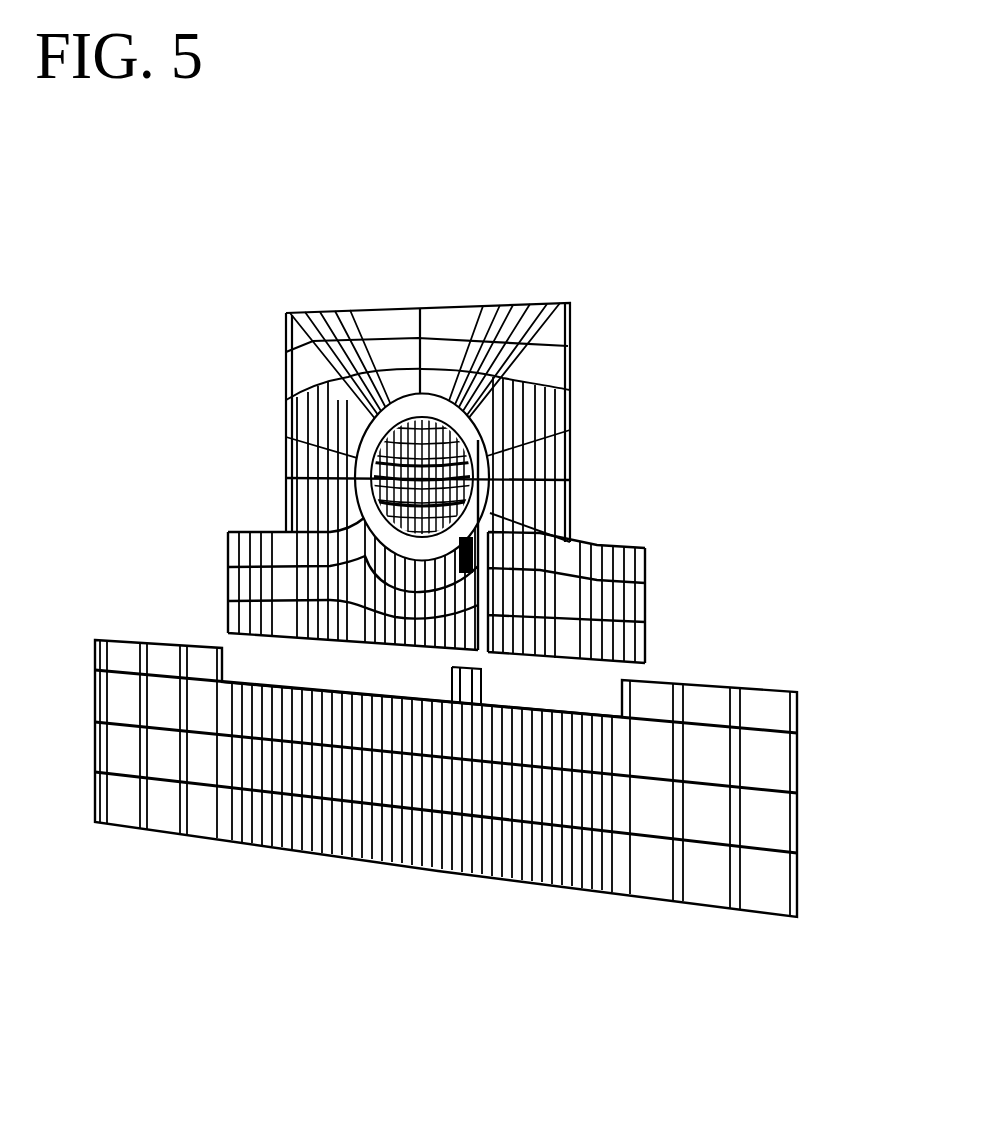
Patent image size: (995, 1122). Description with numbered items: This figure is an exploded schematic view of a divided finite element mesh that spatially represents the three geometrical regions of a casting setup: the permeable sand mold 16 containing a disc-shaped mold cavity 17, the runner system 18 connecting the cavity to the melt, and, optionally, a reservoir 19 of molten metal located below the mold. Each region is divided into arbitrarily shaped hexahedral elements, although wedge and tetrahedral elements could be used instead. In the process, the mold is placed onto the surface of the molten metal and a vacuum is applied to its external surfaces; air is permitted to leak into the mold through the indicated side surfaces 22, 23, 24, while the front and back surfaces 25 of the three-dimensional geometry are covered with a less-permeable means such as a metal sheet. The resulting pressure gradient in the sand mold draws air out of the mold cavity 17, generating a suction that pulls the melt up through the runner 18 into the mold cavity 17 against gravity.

The mold 16 is at (222, 592).
The mold cavity 17 is at (482, 462).
The runner system 18 is at (490, 531).
The reservoir of molten metal 19 is at (438, 873).
The side surface 22 is at (283, 453).
The side surface 23 is at (328, 312).
The side surface 24 is at (570, 340).
The front and back surfaces 25 is at (541, 313).